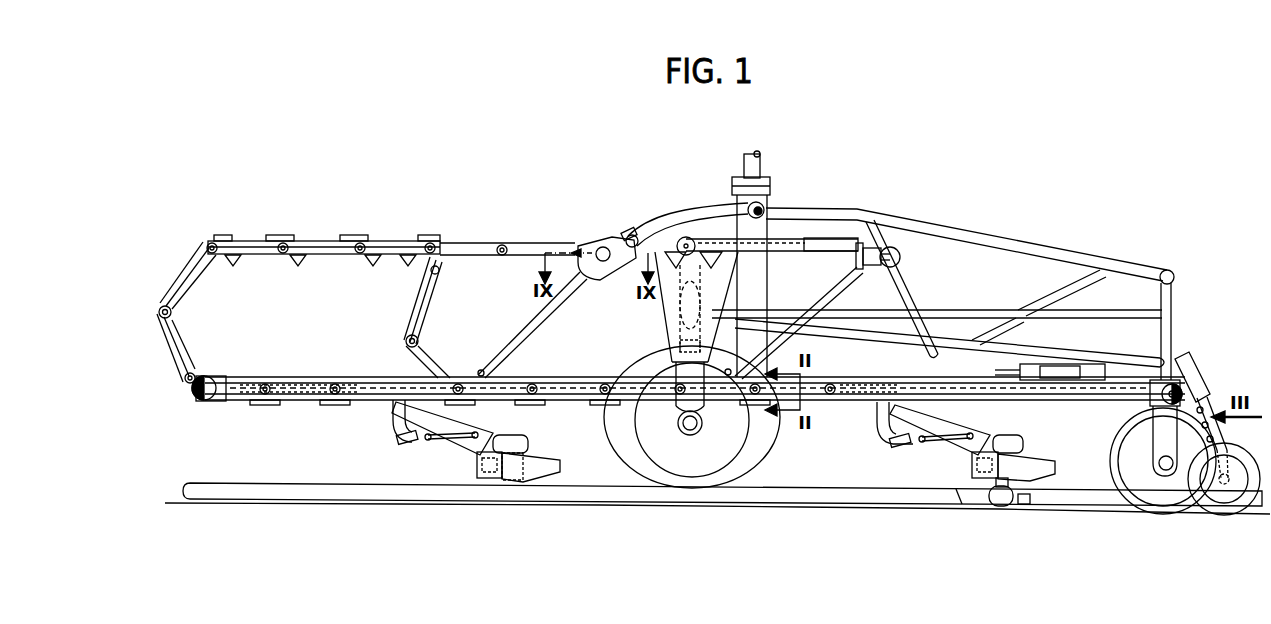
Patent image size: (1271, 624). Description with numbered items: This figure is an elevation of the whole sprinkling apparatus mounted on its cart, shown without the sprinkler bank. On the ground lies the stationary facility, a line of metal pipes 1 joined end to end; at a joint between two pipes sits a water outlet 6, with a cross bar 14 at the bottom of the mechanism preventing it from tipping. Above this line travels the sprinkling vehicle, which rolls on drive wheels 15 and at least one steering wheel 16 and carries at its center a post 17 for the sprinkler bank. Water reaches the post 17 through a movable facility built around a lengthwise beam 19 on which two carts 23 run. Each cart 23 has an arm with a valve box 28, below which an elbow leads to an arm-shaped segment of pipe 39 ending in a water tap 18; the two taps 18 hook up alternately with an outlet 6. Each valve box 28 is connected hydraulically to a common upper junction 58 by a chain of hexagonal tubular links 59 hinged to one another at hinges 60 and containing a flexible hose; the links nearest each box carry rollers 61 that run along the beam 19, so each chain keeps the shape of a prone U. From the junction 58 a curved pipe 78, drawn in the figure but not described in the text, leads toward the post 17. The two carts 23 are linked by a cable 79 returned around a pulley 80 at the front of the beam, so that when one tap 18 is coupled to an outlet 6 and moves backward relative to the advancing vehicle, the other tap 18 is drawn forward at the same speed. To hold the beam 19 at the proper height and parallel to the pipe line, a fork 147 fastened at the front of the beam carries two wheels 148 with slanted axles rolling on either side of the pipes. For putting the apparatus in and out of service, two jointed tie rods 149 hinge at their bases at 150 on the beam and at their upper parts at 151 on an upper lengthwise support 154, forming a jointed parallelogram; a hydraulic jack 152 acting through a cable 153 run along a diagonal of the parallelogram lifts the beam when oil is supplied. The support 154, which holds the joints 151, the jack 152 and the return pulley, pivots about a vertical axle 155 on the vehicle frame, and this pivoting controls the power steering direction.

The metal pipes 1 is at (557, 499).
The water outlet 6 is at (1005, 506).
The cross bar 14 is at (1026, 506).
The drive wheels 15 is at (760, 452).
The steering wheel 16 is at (1132, 463).
The post 17 is at (764, 204).
The water taps 18 is at (533, 450).
The lengthwise beam 19 is at (1030, 401).
The cart 23 is at (941, 377).
The valve box 28 is at (366, 389).
The segment of pipe 39 is at (447, 450).
The upper junction 58 is at (597, 242).
The tubular links 59 is at (573, 412).
The hinges 60 is at (280, 244).
The roller 61 is at (438, 240).
The pipe 78 is at (693, 214).
The cable 79 is at (1060, 380).
The pulley 80 is at (198, 400).
The fork 147 is at (1198, 400).
The wheels 148 is at (1226, 512).
The tie rods 149 is at (548, 303).
The base joints 150 is at (479, 370).
The upper joints 151 is at (629, 236).
The hydraulic jack 152 is at (872, 266).
The cable 153 is at (682, 292).
The upper lengthwise support 154 is at (795, 239).
The vertical axle 155 is at (666, 334).